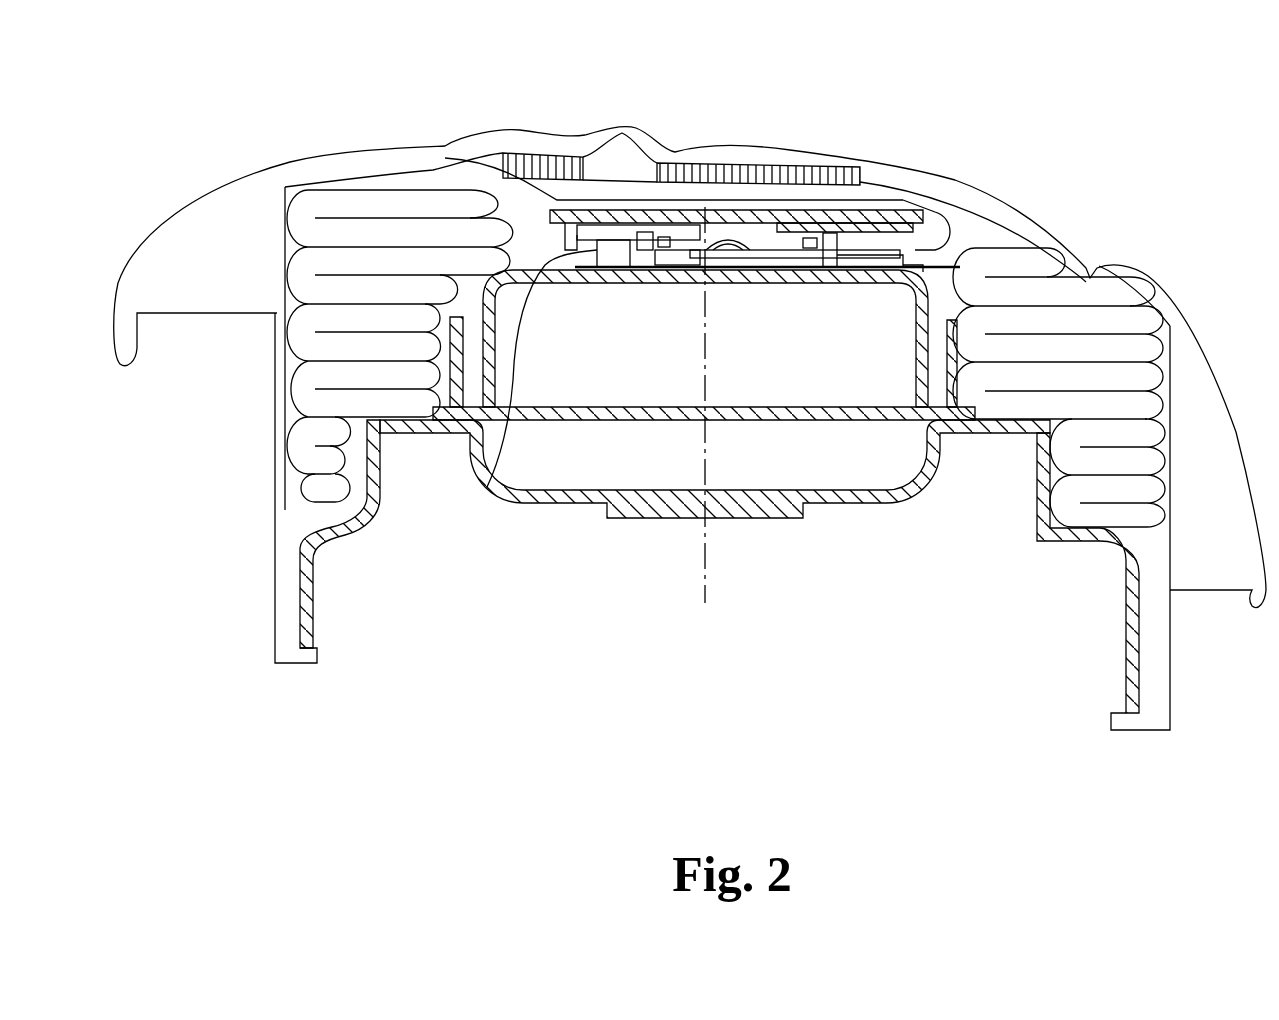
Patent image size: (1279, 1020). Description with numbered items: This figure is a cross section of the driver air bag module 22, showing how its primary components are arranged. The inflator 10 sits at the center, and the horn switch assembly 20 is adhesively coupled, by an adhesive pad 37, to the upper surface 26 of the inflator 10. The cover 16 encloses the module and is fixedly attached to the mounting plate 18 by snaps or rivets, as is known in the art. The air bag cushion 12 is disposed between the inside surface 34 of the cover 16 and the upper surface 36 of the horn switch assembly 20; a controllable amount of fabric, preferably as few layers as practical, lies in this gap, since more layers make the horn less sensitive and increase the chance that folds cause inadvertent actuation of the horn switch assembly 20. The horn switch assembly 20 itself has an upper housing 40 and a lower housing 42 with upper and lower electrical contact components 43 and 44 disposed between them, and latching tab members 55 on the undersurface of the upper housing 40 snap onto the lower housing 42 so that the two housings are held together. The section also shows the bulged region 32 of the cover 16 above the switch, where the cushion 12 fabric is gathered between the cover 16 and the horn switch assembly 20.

The inflator 10 is at (540, 498).
The cushion 12 is at (582, 190).
The cover 16 is at (973, 187).
The mounting plate 18 is at (307, 597).
The horn switch assembly 20 is at (617, 262).
The air bag module 22 is at (910, 133).
The upper surface of the inflator 26 is at (853, 283).
The cover bulge 32 is at (631, 152).
The inside surface of the cover 34 is at (418, 190).
The upper surface of the horn switch assembly 36 is at (745, 185).
The adhesive pad 37 is at (777, 268).
The upper housing 40 is at (570, 217).
The lower housing 42 is at (597, 250).
The upper electrical contact component 43 is at (800, 210).
The lower electrical contact component 44 is at (750, 253).
The latching tab members 55 is at (487, 487).